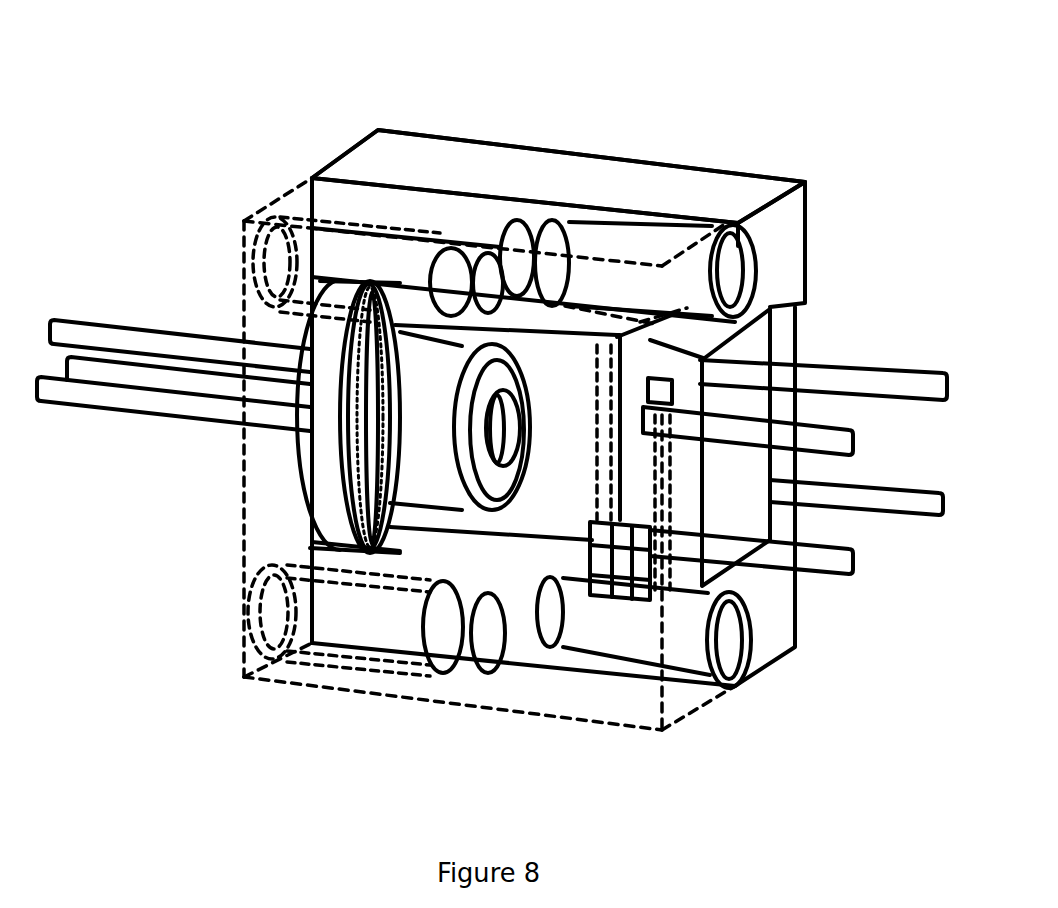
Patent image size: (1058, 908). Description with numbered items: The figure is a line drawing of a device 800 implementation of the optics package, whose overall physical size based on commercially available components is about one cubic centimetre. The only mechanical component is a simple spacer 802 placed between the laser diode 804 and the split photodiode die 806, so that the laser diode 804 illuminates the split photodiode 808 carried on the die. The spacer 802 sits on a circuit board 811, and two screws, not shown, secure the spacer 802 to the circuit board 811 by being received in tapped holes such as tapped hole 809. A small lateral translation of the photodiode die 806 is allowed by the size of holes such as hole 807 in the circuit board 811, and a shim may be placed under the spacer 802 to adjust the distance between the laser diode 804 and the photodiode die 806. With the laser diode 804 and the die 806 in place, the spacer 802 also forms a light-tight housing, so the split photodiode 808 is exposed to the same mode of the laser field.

The device 800 is at (713, 133).
The spacer 802 is at (513, 170).
The laser diode 804 is at (313, 415).
The split photodiode die 806 is at (587, 522).
The hole 807 is at (752, 248).
The split photodiode 808 is at (677, 490).
The tapped hole 809 is at (548, 218).
The circuit board 811 is at (805, 182).